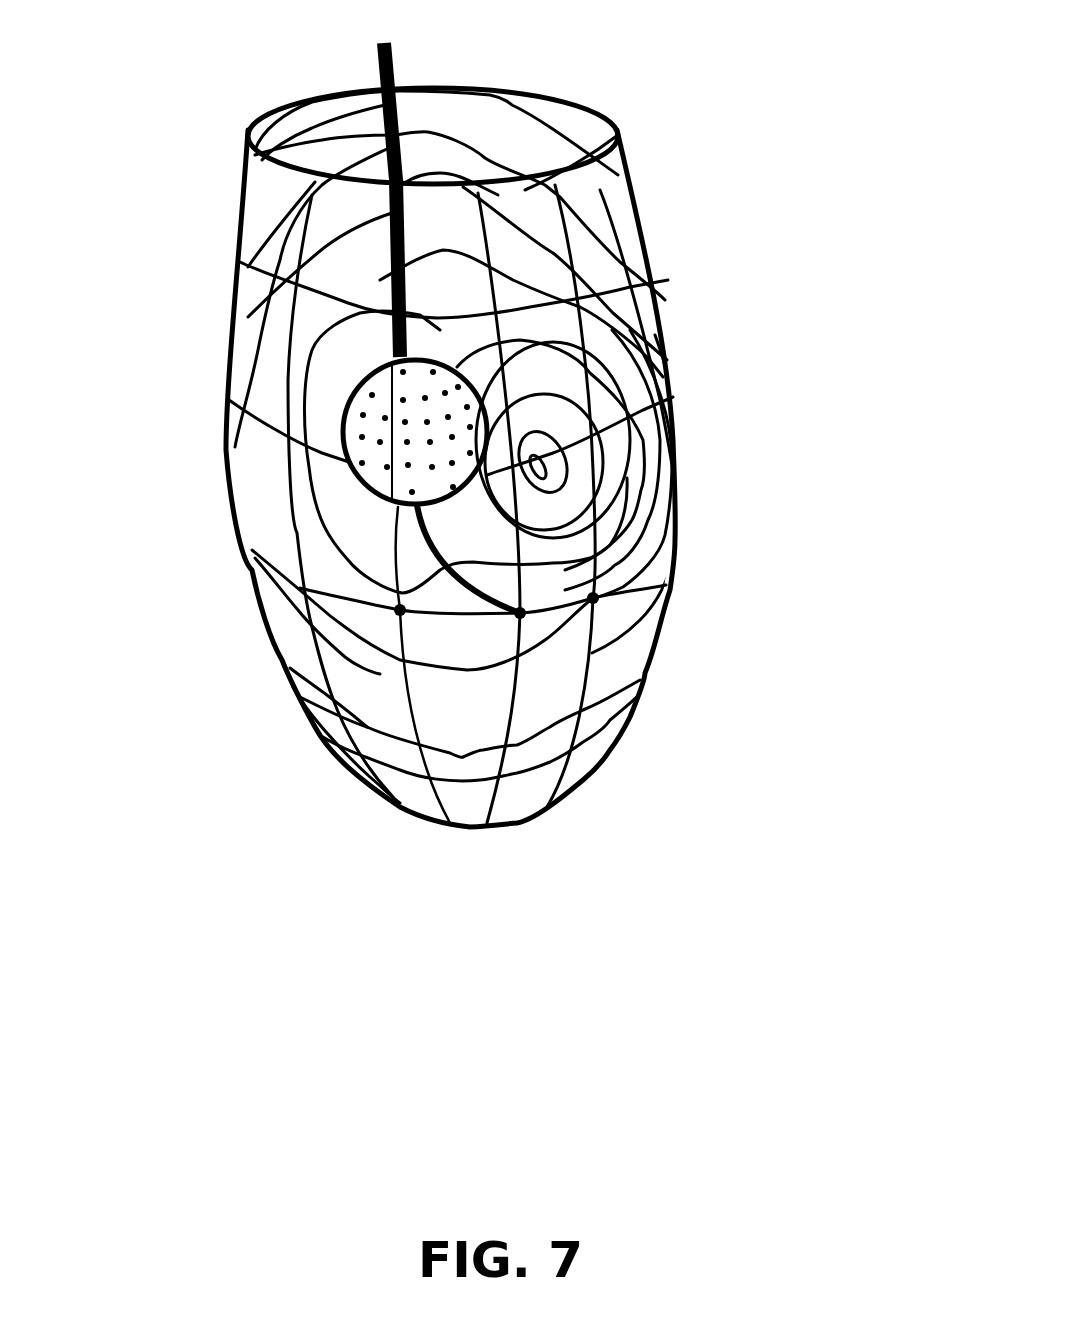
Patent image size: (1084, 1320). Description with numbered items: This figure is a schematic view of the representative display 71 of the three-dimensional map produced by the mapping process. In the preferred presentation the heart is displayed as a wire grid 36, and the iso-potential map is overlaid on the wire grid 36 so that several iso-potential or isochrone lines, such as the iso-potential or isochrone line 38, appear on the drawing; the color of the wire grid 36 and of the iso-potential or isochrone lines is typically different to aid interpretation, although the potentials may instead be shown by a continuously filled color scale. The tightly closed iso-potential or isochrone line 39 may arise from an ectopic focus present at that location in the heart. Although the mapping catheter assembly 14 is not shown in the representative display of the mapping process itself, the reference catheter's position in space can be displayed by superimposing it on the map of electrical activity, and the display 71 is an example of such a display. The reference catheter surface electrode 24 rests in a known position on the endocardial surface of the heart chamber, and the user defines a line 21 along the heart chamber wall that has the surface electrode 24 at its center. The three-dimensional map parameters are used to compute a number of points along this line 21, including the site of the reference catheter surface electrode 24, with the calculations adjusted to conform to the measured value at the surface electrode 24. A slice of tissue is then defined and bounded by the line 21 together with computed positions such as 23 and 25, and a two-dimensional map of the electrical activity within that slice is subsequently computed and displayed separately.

The mapping catheter assembly 14 is at (398, 122).
The line 21 is at (437, 606).
The computed position 23 is at (400, 610).
The reference catheter surface electrode 24 is at (520, 613).
The computed position 25 is at (593, 598).
The wire grid 36 is at (610, 290).
The iso-potential or isochrone line 38 is at (271, 314).
The tightly closed iso-potential or isochrone line 39 is at (537, 467).
The display 71 is at (763, 147).